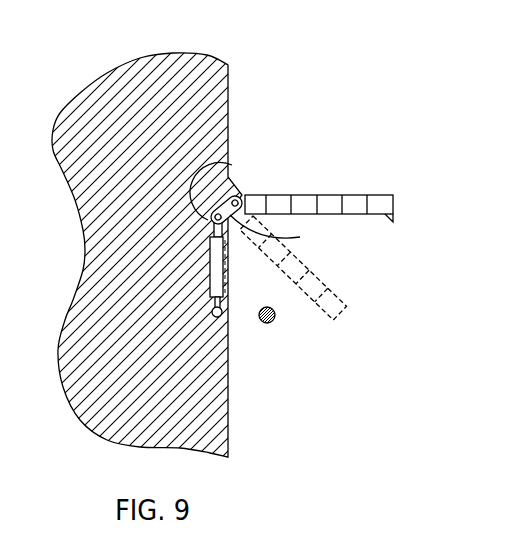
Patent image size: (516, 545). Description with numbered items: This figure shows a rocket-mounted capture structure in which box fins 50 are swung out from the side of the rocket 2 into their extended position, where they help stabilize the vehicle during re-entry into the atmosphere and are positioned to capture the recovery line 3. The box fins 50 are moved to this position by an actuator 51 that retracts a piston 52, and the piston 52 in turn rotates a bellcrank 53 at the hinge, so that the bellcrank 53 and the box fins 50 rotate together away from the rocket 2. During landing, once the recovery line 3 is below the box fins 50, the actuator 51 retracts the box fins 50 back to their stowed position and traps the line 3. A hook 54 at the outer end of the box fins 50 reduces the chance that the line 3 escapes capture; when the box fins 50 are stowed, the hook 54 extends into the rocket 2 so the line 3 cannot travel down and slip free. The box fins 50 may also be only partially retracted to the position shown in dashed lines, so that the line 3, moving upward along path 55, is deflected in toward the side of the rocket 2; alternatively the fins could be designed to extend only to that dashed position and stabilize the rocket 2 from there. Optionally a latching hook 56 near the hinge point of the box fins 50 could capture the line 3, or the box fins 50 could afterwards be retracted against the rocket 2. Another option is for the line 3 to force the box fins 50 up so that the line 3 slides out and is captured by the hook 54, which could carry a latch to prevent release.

The rocket 2 is at (72, 103).
The recovery line 3 is at (273, 321).
The box fins 50 is at (335, 290).
The actuator 51 is at (221, 319).
The piston 52 is at (220, 165).
The bellcrank 53 is at (232, 178).
The hook 54 is at (395, 219).
The path 55 is at (248, 246).
The latching hook 56 is at (272, 228).